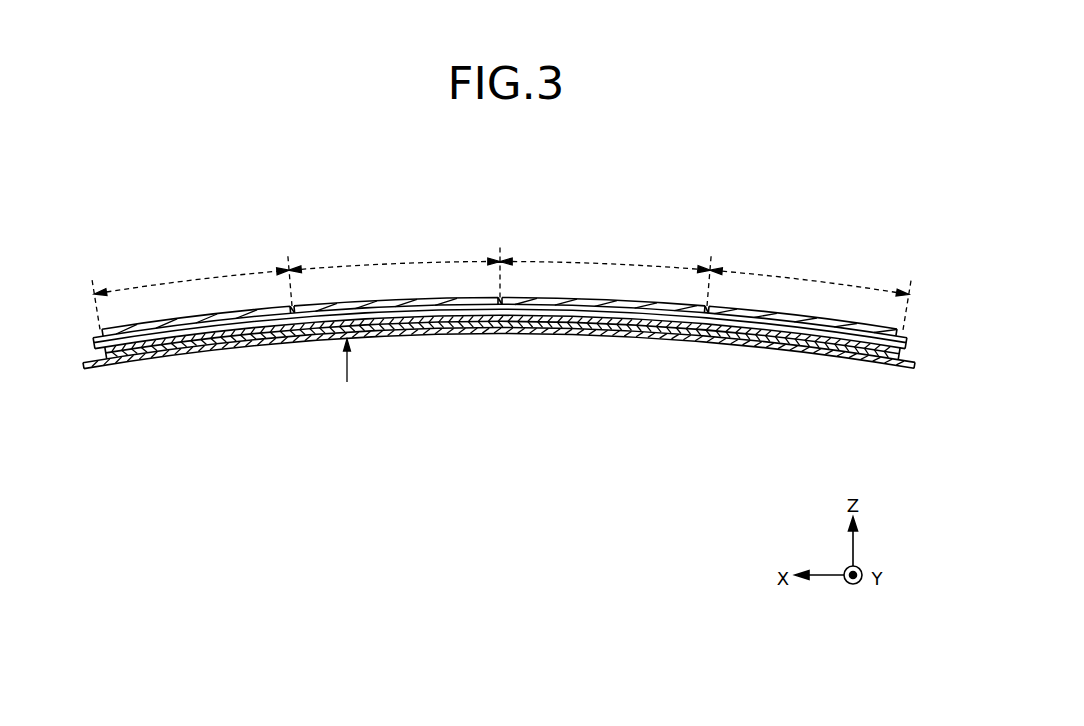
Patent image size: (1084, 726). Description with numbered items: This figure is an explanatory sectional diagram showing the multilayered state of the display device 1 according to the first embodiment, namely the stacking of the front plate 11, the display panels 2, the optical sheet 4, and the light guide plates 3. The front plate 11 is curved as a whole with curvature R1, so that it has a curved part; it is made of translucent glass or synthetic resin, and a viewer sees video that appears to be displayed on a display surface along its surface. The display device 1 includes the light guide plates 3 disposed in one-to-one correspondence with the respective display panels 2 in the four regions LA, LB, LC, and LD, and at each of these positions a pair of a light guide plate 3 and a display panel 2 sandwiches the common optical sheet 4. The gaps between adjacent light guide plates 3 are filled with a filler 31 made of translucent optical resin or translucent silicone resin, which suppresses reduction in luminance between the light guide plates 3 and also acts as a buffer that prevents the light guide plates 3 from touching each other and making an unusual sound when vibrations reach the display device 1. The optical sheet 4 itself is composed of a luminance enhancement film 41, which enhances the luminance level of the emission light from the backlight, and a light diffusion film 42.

The display device 1 is at (816, 232).
The front plate 11 is at (823, 357).
The display panel 2 is at (199, 343).
The light guide plate 3 is at (785, 318).
The filler 31 is at (292, 309).
The optical sheet 4 is at (835, 422).
The luminance enhancement film 41 is at (860, 346).
The light diffusion film 42 is at (883, 343).
The curvature R1 is at (331, 360).
The region LA is at (191, 273).
The region LB is at (394, 253).
The region LC is at (605, 253).
The region LD is at (809, 275).